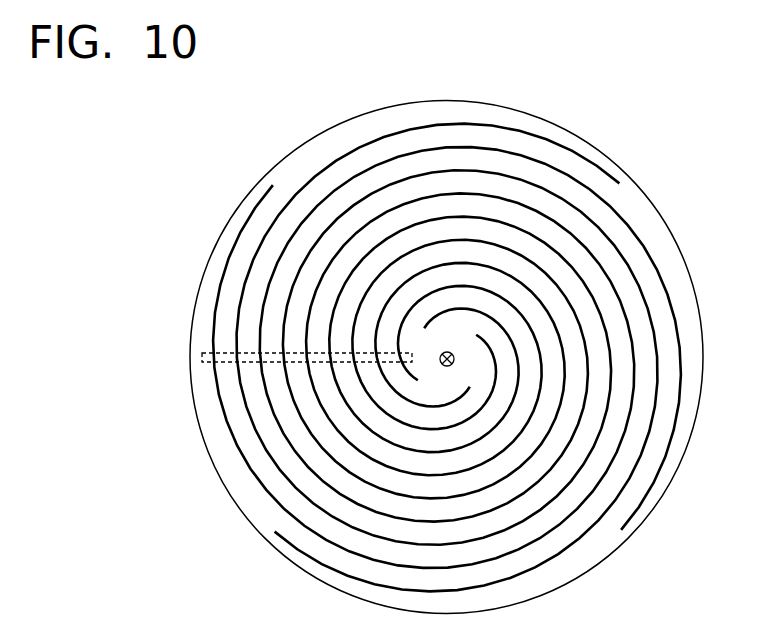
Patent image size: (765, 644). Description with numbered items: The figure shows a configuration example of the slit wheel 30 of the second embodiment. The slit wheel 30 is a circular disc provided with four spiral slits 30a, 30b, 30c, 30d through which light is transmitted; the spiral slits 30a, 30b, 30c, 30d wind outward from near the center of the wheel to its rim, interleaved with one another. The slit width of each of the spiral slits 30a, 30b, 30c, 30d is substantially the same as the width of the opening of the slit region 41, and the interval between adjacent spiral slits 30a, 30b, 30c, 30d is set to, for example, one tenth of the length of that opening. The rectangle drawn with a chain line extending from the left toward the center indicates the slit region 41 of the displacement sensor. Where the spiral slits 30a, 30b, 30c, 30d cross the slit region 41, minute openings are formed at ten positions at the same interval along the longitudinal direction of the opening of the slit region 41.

The slit wheel 30 is at (555, 123).
The spiral slit 30a is at (606, 163).
The spiral slit 30b is at (258, 200).
The spiral slit 30c is at (288, 545).
The spiral slit 30d is at (632, 518).
The slit region 41 is at (202, 357).